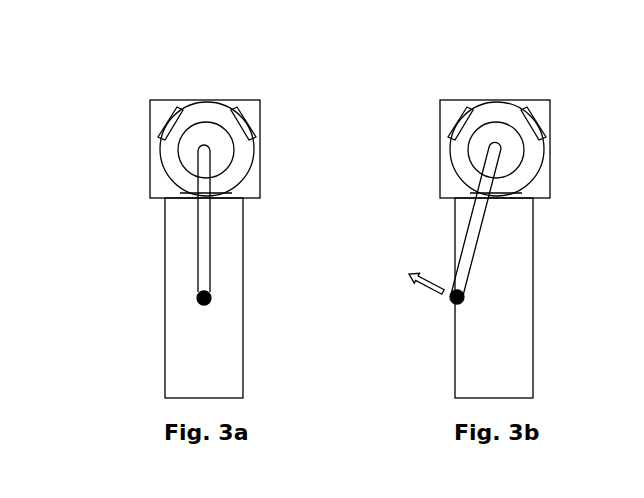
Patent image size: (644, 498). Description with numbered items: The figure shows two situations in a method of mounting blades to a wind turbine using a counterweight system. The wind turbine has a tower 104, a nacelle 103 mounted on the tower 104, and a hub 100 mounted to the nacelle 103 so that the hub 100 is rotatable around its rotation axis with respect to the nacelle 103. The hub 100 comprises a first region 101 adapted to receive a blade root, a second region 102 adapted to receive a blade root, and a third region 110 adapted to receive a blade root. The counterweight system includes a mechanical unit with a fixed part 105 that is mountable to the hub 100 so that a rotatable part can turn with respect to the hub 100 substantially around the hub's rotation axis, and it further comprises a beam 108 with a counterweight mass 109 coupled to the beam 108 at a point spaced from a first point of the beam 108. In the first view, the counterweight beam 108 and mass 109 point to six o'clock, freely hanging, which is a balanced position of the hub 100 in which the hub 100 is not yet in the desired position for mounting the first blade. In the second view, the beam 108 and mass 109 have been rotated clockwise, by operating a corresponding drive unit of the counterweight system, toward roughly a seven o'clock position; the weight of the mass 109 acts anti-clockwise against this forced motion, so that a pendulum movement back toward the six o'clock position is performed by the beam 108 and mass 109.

In FIG. 3A, the hub 100 is at (205, 148).
In FIG. 3A, the first region 101 is at (248, 128).
In FIG. 3B, the first region 101 is at (538, 128).
In FIG. 3A, the second region 102 is at (223, 196).
In FIG. 3B, the second region 102 is at (513, 196).
In FIG. 3A, the nacelle 103 is at (258, 186).
In FIG. 3B, the nacelle 103 is at (495, 149).
In FIG. 3A, the tower 104 is at (226, 355).
In FIG. 3B, the tower 104 is at (494, 298).
In FIG. 3A, the fixed part 105 is at (207, 122).
In FIG. 3B, the fixed part 105 is at (496, 150).
In FIG. 3A, the beam 108 is at (210, 269).
In FIG. 3B, the beam 108 is at (470, 233).
In FIG. 3A, the counterweight mass 109 is at (212, 298).
In FIG. 3B, the counterweight mass 109 is at (452, 303).
In FIG. 3A, the third region 110 is at (162, 130).
In FIG. 3B, the third region 110 is at (452, 130).